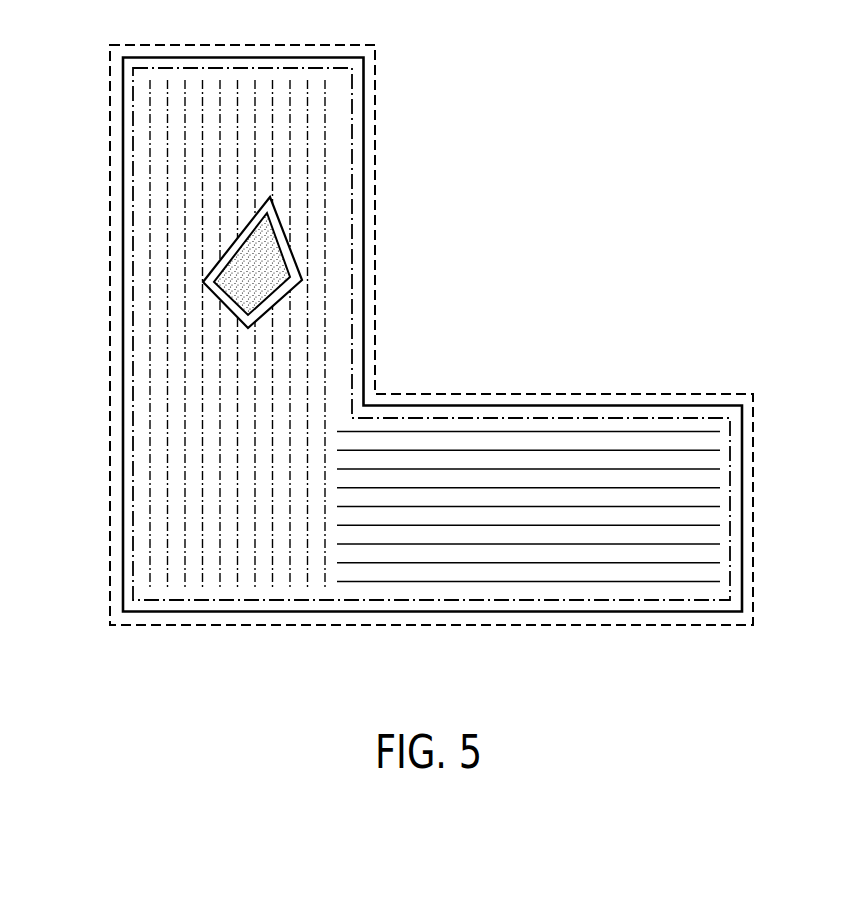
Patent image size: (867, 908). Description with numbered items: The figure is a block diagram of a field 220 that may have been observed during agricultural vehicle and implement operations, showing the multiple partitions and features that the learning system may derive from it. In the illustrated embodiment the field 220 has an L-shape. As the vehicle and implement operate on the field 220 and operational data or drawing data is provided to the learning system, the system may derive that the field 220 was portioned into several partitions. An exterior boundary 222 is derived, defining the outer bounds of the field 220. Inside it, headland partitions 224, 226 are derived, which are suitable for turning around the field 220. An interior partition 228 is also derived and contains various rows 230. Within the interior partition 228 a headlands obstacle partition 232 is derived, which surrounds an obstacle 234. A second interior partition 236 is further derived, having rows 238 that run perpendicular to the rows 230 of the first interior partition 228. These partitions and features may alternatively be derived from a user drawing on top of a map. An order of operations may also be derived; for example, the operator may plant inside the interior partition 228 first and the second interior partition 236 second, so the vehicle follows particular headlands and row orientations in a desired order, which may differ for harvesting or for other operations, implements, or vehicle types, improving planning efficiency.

The field 220 is at (567, 159).
The exterior boundary 222 is at (295, 45).
The headland partition 224 is at (122, 79).
The headland partition 226 is at (134, 144).
The interior partition 228 is at (252, 157).
The rows 230 is at (221, 99).
The headlands obstacle partition 232 is at (215, 300).
The obstacle 234 is at (254, 273).
The second interior partition 236 is at (596, 468).
The rows 238 is at (572, 527).